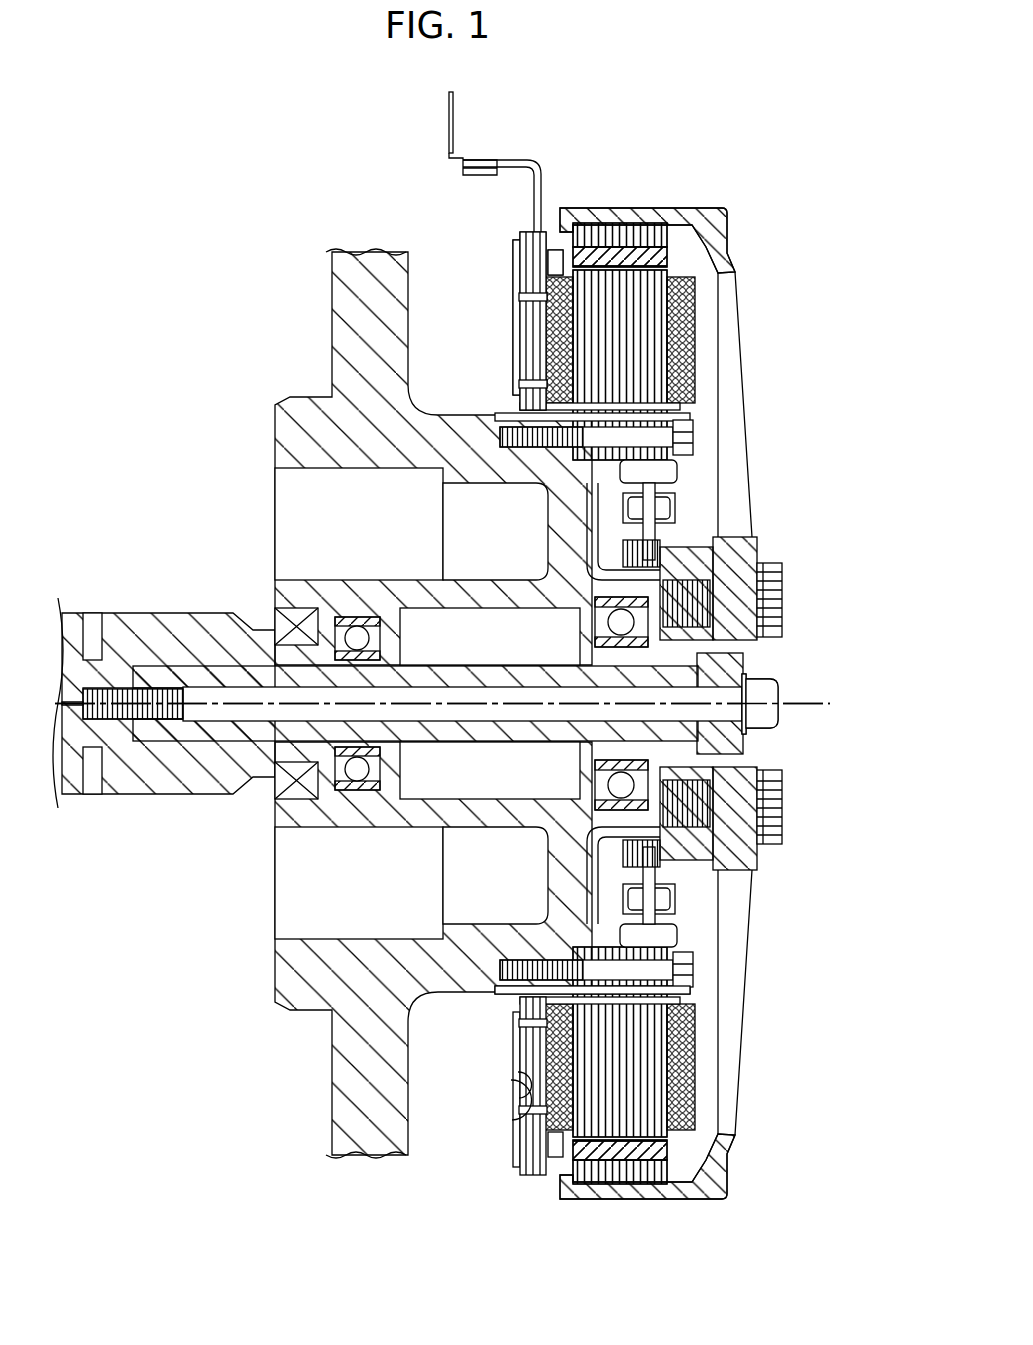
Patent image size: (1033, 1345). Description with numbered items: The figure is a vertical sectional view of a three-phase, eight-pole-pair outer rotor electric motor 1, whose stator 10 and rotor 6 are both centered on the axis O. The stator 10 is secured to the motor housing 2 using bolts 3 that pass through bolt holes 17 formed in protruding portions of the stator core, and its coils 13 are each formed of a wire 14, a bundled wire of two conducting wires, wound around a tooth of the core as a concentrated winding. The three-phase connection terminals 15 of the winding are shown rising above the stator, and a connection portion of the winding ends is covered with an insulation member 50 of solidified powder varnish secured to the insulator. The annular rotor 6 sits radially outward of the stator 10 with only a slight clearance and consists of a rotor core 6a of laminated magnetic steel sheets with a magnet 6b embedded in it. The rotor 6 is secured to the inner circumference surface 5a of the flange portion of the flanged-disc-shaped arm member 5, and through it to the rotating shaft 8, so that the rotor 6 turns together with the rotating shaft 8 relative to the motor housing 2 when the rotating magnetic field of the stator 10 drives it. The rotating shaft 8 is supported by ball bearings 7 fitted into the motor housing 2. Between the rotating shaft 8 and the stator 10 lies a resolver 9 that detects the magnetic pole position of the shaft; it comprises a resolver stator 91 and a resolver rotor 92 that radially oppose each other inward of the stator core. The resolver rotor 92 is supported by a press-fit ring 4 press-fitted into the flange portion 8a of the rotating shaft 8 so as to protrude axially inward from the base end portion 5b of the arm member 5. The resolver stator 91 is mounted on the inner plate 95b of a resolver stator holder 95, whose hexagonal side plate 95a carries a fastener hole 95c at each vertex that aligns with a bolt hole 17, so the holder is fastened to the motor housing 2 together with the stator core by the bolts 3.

The electric motor 1 is at (735, 178).
The motor housing 2 is at (345, 299).
The bolts 3 is at (685, 437).
The press-fit ring 4 is at (695, 870).
The arm member 5 is at (727, 290).
The inner circumference surface 5a is at (643, 242).
The base end portion 5b is at (728, 762).
The rotor 6 is at (638, 152).
The rotor core 6a is at (584, 235).
The magnet 6b is at (615, 255).
The ball bearings 7 is at (388, 625).
The rotating shaft 8 is at (745, 660).
The flange portion 8a is at (700, 840).
The resolver 9 is at (677, 528).
The resolver stator 91 is at (660, 495).
The resolver rotor 92 is at (655, 530).
The stator 10 is at (500, 285).
The coils 13 is at (698, 325).
The wire 14 is at (537, 188).
The connection terminals 15 is at (456, 106).
The bolt hole 17 is at (690, 413).
The insulation member 50 is at (552, 262).
The resolver stator holder 95 is at (680, 925).
The side plate 95a is at (668, 945).
The inner plate 95b is at (665, 905).
The fastener hole 95c is at (662, 983).
The axis O is at (818, 704).